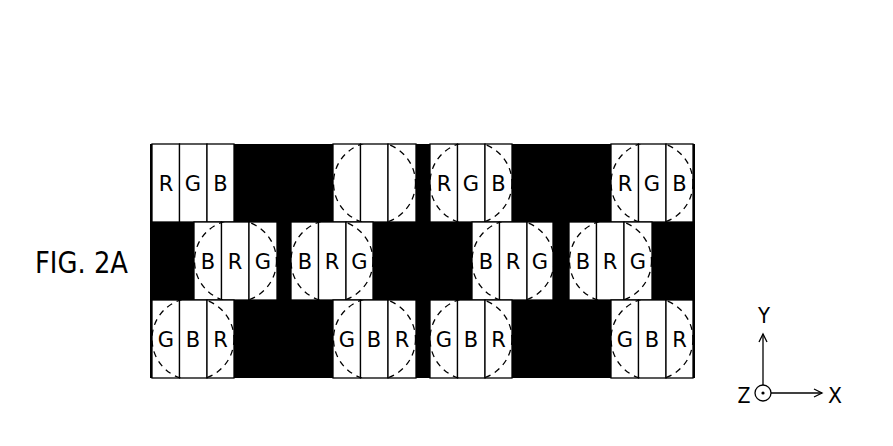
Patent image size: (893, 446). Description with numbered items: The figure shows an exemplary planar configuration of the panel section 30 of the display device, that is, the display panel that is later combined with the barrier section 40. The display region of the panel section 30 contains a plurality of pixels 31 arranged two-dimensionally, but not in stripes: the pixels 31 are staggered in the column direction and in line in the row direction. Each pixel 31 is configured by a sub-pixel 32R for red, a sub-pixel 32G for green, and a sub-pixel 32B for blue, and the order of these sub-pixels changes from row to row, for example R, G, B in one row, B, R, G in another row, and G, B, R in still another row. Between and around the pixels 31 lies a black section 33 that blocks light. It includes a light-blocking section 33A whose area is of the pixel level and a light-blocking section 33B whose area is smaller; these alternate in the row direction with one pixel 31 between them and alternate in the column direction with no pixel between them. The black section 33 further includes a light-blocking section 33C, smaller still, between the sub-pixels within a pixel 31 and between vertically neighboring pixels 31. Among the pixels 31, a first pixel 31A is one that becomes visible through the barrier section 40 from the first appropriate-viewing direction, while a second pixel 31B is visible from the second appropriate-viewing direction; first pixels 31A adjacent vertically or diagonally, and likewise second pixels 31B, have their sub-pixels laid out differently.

The panel section 30 is at (720, 115).
The pixel 31 is at (374, 123).
The first pixel 31A is at (333, 142).
The second pixel 31B is at (155, 380).
The sub-pixel for red 32R is at (345, 147).
The sub-pixel for green 32G is at (369, 148).
The sub-pixel for blue 32B is at (402, 148).
The black section 33 is at (548, 121).
The light-blocking section 33A is at (567, 142).
The light-blocking section 33B is at (423, 143).
The light-blocking section 33C is at (659, 143).
The barrier section 40 is at (783, 441).